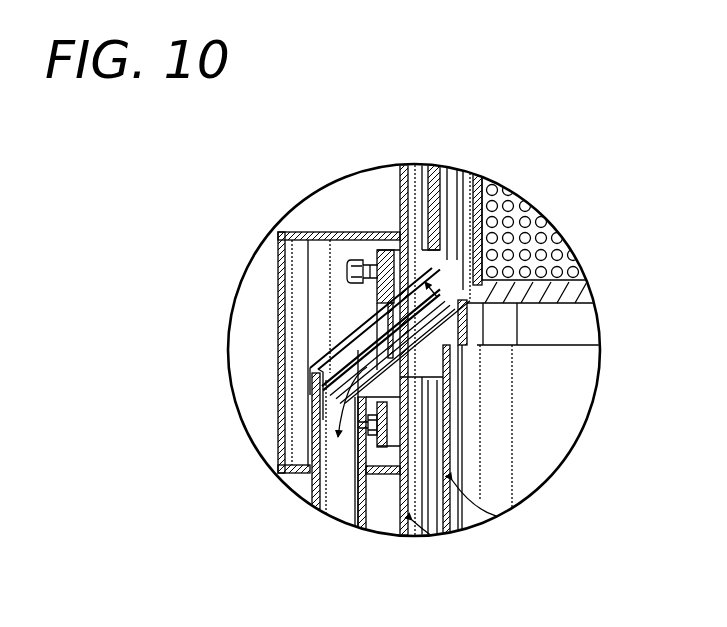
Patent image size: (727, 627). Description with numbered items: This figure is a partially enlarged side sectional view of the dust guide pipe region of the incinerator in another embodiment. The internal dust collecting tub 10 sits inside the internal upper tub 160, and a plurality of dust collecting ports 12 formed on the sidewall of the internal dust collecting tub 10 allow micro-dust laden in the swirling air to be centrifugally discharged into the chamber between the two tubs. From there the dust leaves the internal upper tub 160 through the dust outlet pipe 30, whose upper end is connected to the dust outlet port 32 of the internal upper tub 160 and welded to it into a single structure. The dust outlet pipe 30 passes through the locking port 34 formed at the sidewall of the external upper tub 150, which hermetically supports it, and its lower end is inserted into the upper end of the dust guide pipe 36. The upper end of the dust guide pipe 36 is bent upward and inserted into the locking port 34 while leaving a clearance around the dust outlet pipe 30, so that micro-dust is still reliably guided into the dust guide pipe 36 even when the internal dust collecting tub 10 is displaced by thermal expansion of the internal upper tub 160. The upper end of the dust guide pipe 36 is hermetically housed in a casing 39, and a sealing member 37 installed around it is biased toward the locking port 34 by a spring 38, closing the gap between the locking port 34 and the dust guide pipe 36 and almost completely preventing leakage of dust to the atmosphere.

The internal dust collecting tub 10 is at (577, 337).
The dust collecting ports 12 is at (540, 240).
The dust outlet pipe 30 is at (423, 357).
The dust outlet port 32 is at (443, 343).
The locking port 34 is at (447, 390).
The dust guide pipe 36 is at (308, 440).
The sealing member 37 is at (388, 255).
The spring 38 is at (368, 258).
The casing 39 is at (278, 278).
The external upper tub 150 is at (463, 369).
The internal upper tub 160 is at (507, 350).